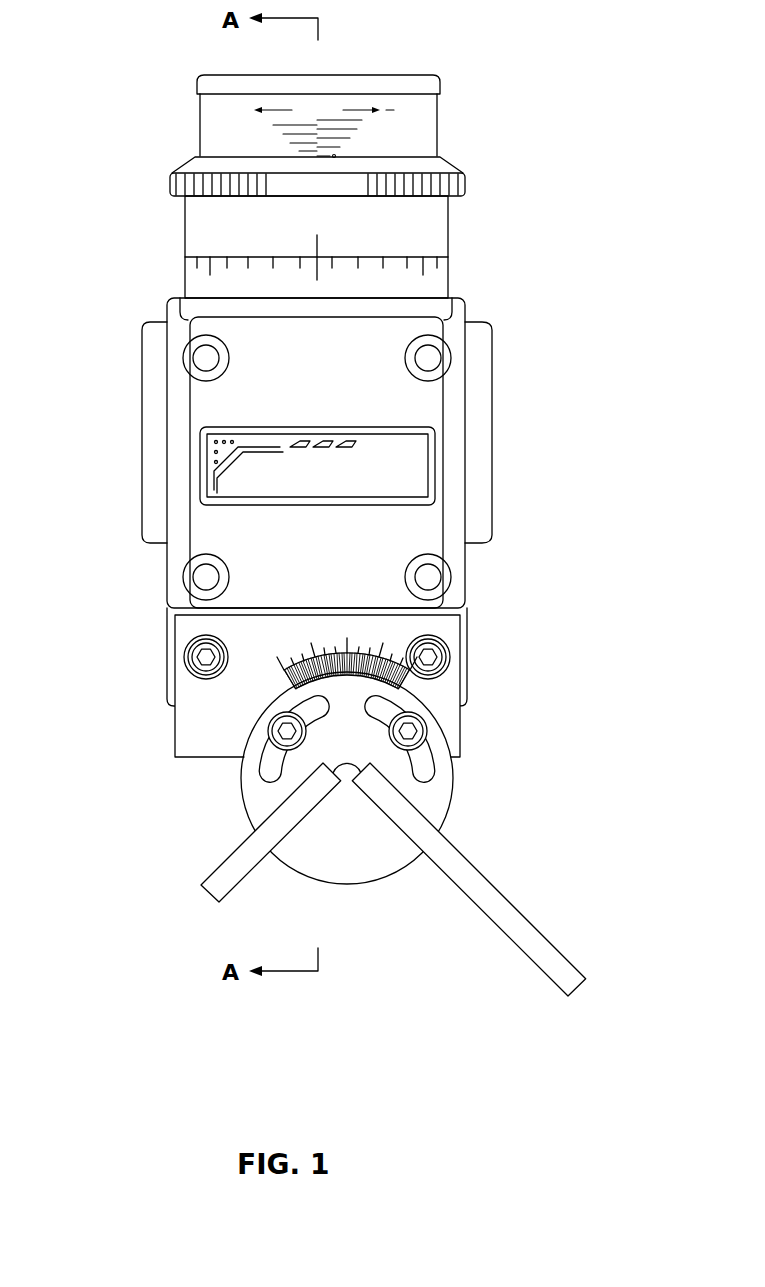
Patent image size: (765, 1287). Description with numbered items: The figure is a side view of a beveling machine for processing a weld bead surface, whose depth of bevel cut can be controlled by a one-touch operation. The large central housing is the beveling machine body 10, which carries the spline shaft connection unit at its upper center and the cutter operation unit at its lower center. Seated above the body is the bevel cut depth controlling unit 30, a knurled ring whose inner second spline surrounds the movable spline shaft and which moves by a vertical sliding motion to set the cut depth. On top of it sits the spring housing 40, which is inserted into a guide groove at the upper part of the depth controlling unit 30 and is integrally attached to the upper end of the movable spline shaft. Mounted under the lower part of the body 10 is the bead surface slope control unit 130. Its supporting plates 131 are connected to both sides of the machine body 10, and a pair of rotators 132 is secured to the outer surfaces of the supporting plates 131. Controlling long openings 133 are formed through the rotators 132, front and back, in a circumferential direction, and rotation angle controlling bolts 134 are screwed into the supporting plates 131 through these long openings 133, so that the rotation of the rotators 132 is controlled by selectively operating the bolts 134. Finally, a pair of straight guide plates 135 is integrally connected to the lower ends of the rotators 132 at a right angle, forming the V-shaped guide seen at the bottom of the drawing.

The beveling machine body 10 is at (208, 405).
The bevel cut depth controlling unit 30 is at (197, 181).
The spring housing 40 is at (222, 88).
The bead surface slope control unit 130 is at (140, 748).
The supporting plate 131 is at (217, 702).
The rotator 132 is at (260, 790).
The controlling long opening 133 is at (420, 763).
The rotation angle controlling bolt 134 is at (412, 731).
The straight guide plate 135 is at (475, 883).